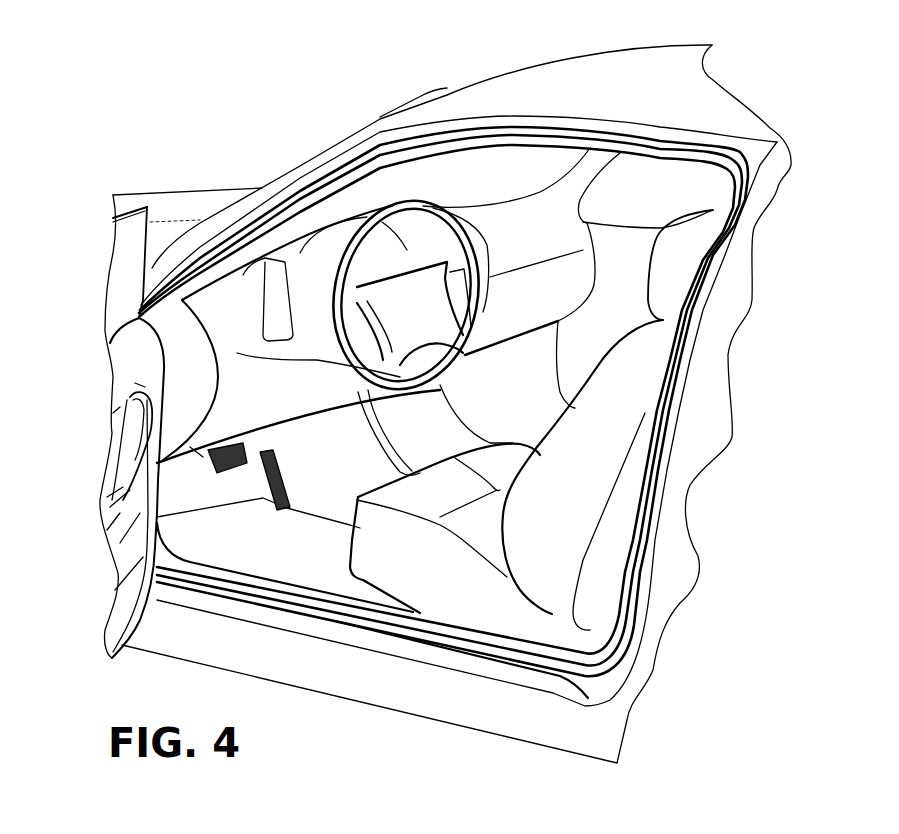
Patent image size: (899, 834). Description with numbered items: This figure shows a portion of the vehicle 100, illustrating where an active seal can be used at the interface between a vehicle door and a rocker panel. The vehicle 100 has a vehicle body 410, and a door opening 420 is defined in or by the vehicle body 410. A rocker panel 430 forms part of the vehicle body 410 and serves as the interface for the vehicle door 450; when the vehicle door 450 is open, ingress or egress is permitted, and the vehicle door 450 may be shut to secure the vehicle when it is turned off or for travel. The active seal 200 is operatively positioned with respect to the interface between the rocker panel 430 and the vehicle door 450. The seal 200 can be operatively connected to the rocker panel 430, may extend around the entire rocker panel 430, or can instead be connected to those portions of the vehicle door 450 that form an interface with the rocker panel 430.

The vehicle 100 is at (236, 102).
The active seal 200 is at (778, 141).
The vehicle body 410 is at (580, 70).
The door opening 420 is at (647, 183).
The rocker panel 430 is at (600, 703).
The vehicle door 450 is at (122, 616).